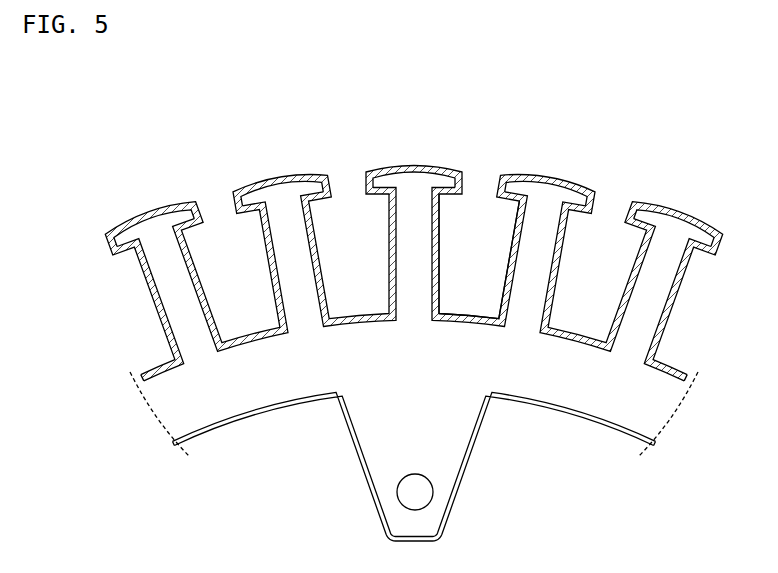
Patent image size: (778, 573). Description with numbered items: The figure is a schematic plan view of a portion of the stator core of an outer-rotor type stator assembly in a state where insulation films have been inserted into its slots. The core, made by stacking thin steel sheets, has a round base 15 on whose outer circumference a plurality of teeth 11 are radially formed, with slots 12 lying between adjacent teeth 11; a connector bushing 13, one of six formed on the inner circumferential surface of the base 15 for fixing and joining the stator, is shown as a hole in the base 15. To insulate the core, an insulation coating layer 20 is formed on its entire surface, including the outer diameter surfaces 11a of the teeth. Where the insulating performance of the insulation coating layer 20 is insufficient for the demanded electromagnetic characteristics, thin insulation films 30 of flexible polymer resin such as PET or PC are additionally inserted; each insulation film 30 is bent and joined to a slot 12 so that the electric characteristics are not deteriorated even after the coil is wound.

The teeth 11 is at (379, 243).
The outer diameter surfaces of the teeth 11a is at (132, 227).
The slot 12 is at (478, 218).
The connector bushing 13 is at (447, 475).
The base 15 is at (653, 408).
The insulation coating layer 20 is at (384, 236).
The insulation film 30 is at (148, 295).